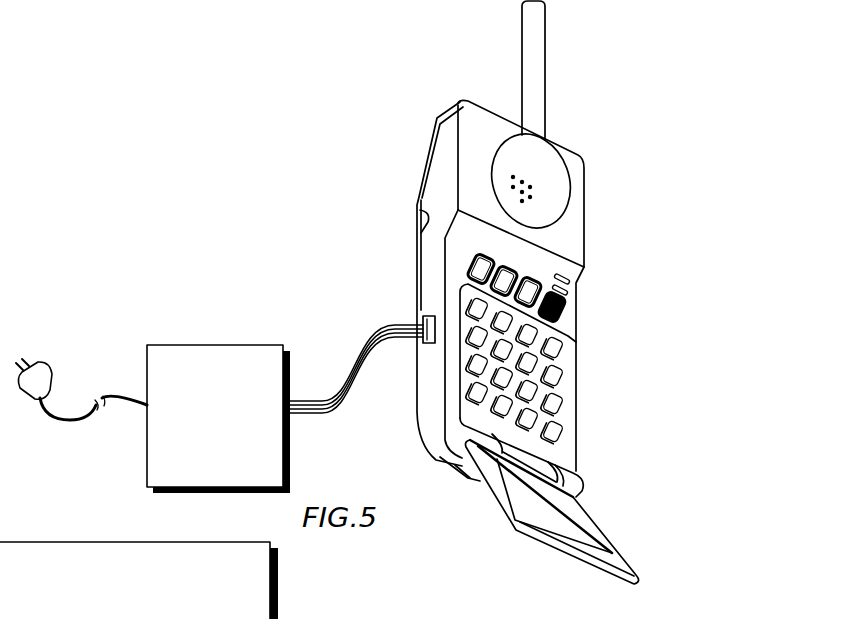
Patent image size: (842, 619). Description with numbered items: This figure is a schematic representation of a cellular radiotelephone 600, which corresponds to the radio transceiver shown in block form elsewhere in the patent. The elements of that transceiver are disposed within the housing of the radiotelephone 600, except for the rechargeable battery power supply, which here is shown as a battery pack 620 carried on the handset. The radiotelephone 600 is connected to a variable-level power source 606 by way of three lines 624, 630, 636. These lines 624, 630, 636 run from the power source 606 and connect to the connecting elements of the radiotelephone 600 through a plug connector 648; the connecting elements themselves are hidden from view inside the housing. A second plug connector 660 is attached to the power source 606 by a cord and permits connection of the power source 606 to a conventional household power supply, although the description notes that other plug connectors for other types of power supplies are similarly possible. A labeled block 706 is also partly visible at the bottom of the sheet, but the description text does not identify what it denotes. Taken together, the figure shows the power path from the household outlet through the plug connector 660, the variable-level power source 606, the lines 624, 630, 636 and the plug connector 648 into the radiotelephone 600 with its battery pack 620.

The radiotelephone 600 is at (585, 212).
The battery pack 620 is at (420, 195).
The plug connector 648 is at (424, 318).
The line 630 is at (356, 370).
The line 624 is at (344, 391).
The line 636 is at (325, 414).
The variable-level power source 606 is at (212, 345).
The plug connector 660 is at (52, 383).
The radiotelephone block 706 is at (278, 612).